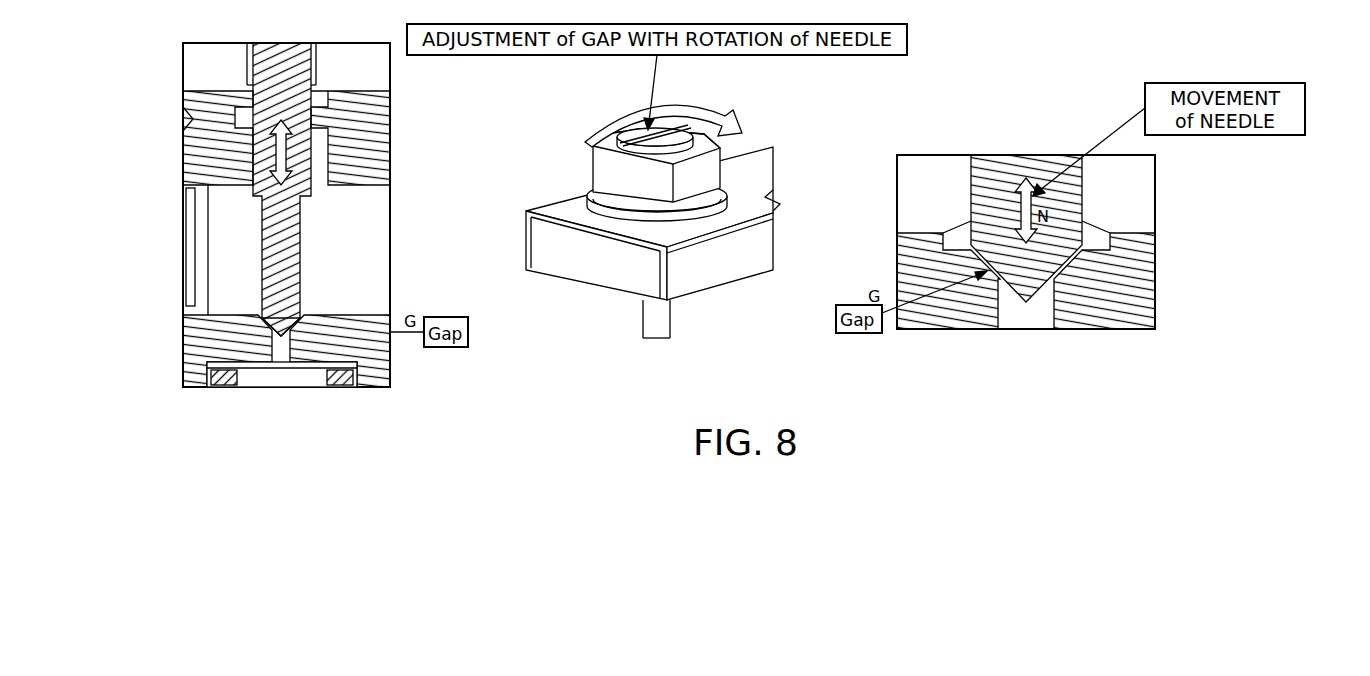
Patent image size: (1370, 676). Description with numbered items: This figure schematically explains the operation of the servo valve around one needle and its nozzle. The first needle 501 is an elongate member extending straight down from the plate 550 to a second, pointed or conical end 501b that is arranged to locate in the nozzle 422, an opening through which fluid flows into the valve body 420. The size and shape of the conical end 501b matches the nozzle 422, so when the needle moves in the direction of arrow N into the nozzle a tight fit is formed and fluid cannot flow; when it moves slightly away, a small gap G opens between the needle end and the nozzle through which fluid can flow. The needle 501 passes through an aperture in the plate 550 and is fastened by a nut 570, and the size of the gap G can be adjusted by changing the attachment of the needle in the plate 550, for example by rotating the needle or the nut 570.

The first needle 501 is at (290, 237).
The second end of the first needle 501b is at (308, 320).
The valve body 420 is at (390, 362).
The nozzle 422 is at (263, 318).
The plate 550 is at (762, 230).
The nut 570 is at (708, 163).